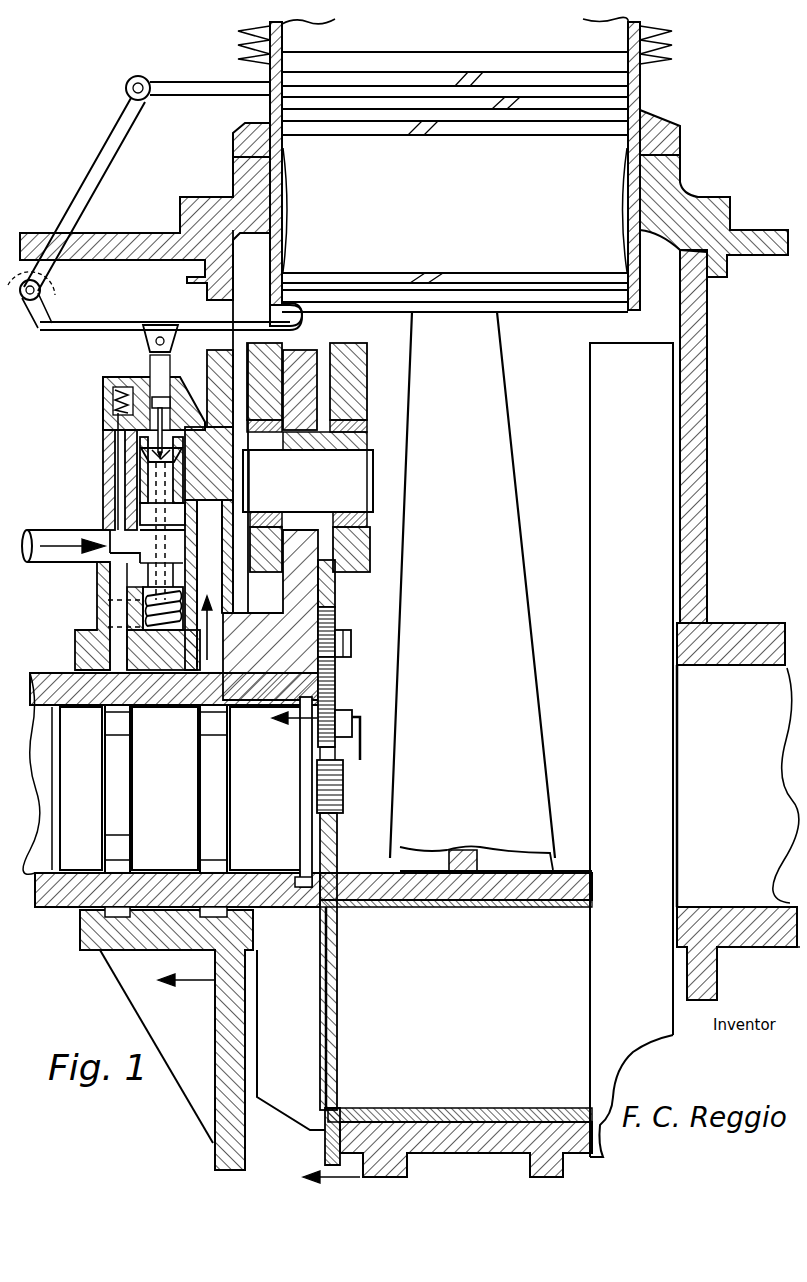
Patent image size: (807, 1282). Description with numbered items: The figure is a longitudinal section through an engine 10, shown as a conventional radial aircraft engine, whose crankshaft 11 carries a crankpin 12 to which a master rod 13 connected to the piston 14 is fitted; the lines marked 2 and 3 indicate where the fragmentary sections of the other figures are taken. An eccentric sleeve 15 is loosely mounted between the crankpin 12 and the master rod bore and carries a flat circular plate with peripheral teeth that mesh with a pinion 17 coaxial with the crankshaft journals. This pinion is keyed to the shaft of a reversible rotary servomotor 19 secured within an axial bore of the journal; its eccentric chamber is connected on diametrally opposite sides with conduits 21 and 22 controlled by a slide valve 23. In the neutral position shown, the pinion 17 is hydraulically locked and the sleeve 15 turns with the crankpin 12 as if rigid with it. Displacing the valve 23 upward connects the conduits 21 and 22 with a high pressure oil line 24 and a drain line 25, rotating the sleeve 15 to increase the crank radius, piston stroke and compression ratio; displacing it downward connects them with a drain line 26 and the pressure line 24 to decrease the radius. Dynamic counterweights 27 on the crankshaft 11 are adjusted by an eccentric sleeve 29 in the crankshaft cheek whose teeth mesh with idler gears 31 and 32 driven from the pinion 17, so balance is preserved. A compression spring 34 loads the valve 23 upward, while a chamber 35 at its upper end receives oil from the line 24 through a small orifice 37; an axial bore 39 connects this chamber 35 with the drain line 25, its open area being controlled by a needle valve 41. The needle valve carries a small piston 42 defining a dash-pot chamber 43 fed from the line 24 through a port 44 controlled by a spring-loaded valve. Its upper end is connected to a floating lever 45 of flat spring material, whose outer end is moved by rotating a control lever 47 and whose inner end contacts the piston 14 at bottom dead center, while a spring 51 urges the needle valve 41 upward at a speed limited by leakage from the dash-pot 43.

The section line 2— 2 is at (316, 947).
The section line 3— 3 is at (190, 755).
The engine 10 is at (240, 170).
The crankshaft 11 is at (600, 737).
The crankpin 12 is at (578, 953).
The master rod 13 is at (558, 870).
The piston 14 is at (553, 263).
The eccentric sleeve 15 is at (498, 1108).
The pinion 17 is at (340, 808).
The reversible rotary servomotor 19 is at (72, 915).
The conduit 21 is at (185, 715).
The conduit 22 is at (91, 811).
The slide valve 23 is at (150, 543).
The high pressure oil line 24 is at (42, 556).
The drain line 25 is at (108, 612).
The drain line 26 is at (150, 483).
The dynamic counterweights 27 is at (360, 392).
The eccentric sleeve 29 is at (338, 600).
The idler gear 31 is at (340, 672).
The idler gear 32 is at (338, 705).
The compression spring 34 is at (135, 642).
The chamber 35 is at (150, 462).
The orifice 37 is at (147, 440).
The axial bore 39 is at (140, 500).
The needle valve 41 is at (168, 372).
The piston 42 is at (118, 405).
The dash-pot chamber 43 is at (138, 385).
The port 44 is at (125, 432).
The floating lever 45 is at (134, 322).
The control lever 47 is at (108, 135).
The spring 51 is at (150, 365).